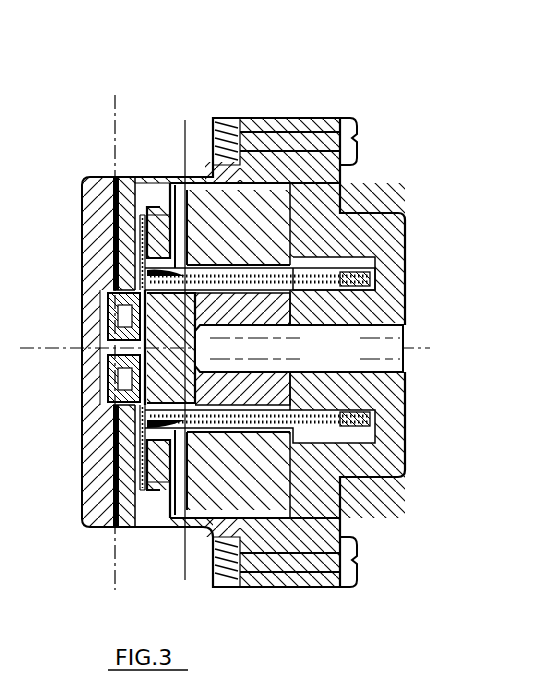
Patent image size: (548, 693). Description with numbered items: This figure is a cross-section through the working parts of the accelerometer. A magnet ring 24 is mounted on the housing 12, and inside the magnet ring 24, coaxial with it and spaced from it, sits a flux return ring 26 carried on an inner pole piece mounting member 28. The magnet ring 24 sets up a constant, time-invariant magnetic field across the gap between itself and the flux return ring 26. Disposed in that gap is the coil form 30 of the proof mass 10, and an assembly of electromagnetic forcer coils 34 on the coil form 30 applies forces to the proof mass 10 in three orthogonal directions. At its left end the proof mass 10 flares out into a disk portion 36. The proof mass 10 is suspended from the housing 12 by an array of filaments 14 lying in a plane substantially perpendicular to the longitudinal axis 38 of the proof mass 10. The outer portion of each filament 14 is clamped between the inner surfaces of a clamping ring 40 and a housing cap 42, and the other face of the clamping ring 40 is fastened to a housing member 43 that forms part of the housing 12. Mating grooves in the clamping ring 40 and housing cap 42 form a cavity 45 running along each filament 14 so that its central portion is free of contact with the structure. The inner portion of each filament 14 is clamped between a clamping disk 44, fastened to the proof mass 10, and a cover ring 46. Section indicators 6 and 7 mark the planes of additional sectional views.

The section line 6- 6 is at (212, 157).
The section line 7- 7 is at (146, 131).
The proof mass 10 is at (372, 268).
The housing 12 is at (357, 215).
The filament 14 is at (112, 240).
The magnet ring 24 is at (249, 242).
The flux return ring 26 is at (247, 314).
The inner pole piece mounting member 28 is at (344, 358).
The coil form 30 is at (352, 420).
The electromagnetic forcer coils 34 is at (255, 474).
The disk portion 36 is at (152, 192).
The longitudinal axis 38 is at (84, 349).
The clamping ring 40 is at (97, 188).
The housing cap 42 is at (100, 222).
The housing member 43 is at (145, 190).
The clamping disk 44 is at (108, 315).
The cavity 45 is at (110, 262).
The cover ring 46 is at (108, 385).